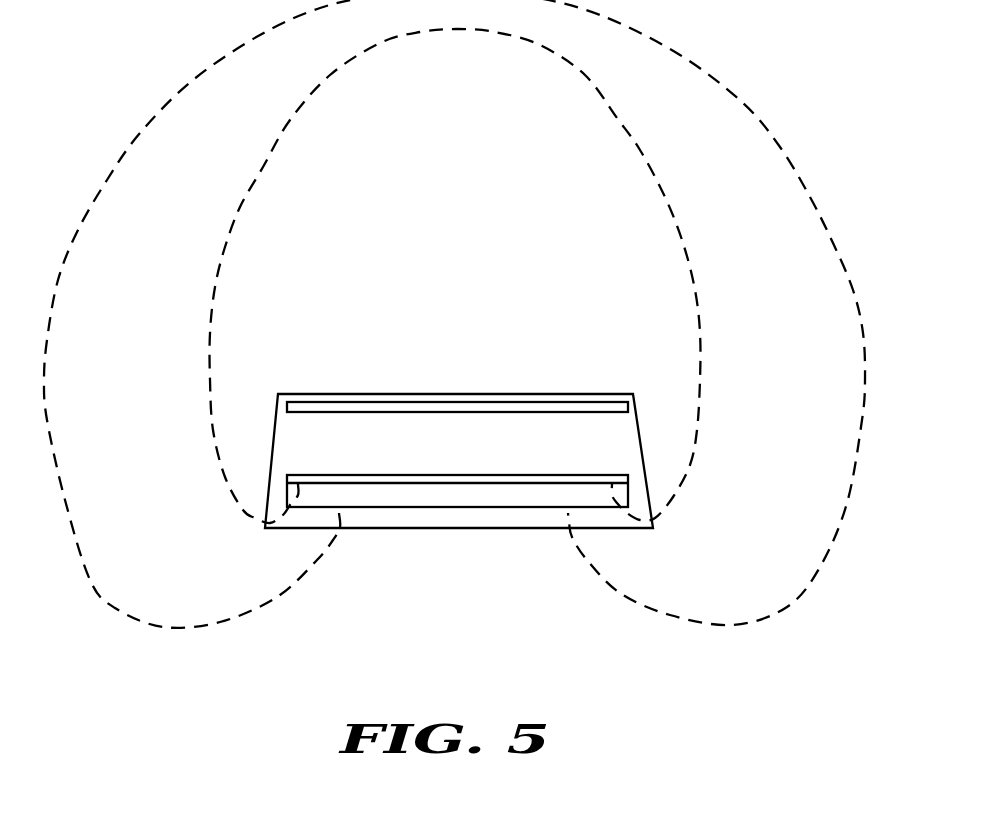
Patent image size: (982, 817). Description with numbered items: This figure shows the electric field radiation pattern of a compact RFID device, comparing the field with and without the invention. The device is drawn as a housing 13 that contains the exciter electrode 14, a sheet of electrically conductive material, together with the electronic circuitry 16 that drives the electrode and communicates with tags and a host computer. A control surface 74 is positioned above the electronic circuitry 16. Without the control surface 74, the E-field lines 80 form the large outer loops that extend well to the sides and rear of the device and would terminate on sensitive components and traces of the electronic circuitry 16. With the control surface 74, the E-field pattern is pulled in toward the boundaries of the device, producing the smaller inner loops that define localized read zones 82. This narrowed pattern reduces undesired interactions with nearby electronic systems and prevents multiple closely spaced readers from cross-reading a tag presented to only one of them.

The housing 13 is at (495, 529).
The exciter electrode 14 is at (417, 404).
The electronic circuitry 16 is at (438, 508).
The control surface 74 is at (382, 484).
The E-field lines 80 is at (131, 148).
The read zones 82 is at (236, 222).